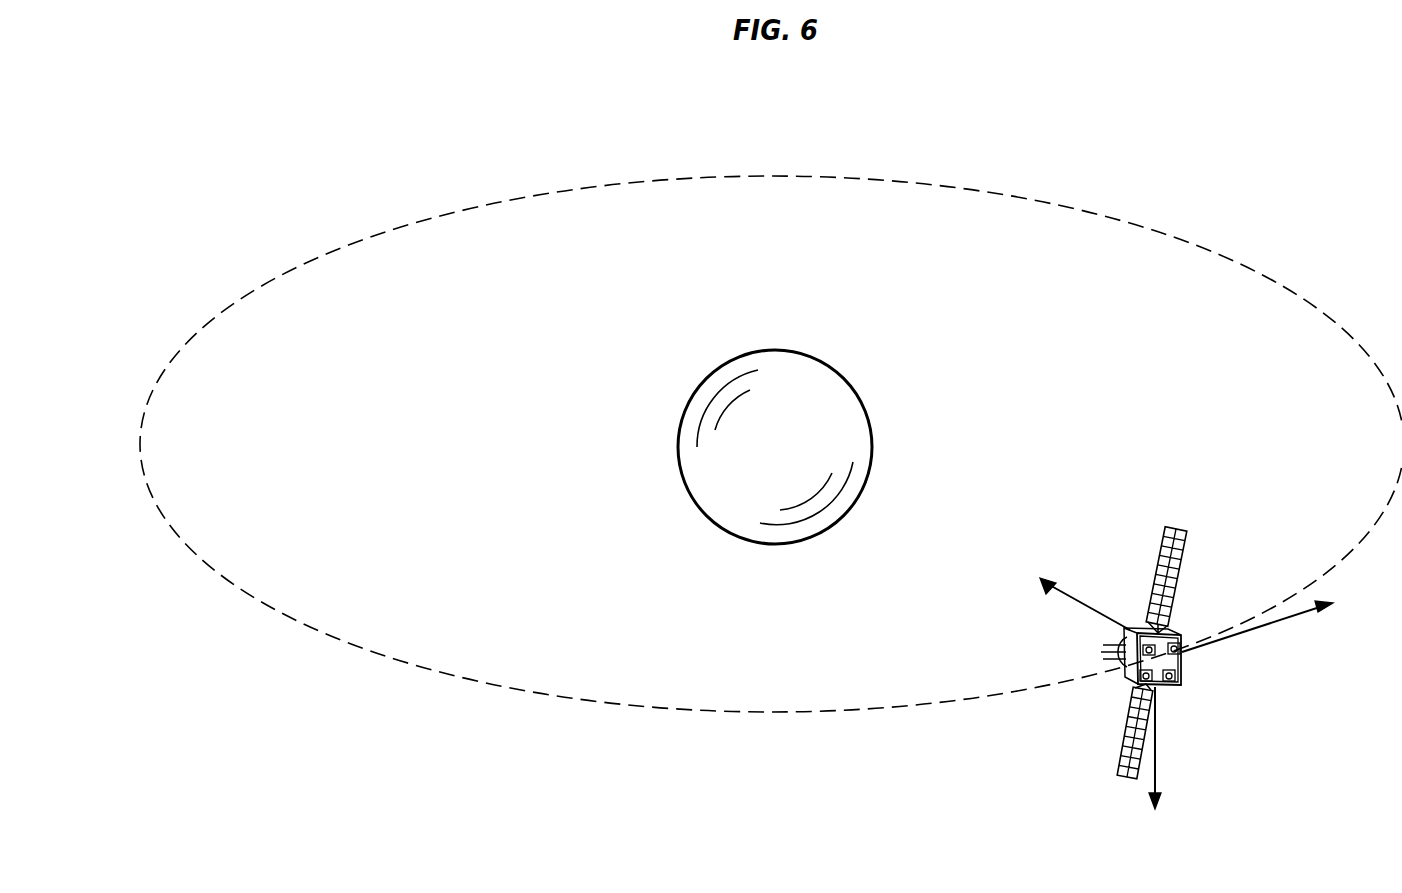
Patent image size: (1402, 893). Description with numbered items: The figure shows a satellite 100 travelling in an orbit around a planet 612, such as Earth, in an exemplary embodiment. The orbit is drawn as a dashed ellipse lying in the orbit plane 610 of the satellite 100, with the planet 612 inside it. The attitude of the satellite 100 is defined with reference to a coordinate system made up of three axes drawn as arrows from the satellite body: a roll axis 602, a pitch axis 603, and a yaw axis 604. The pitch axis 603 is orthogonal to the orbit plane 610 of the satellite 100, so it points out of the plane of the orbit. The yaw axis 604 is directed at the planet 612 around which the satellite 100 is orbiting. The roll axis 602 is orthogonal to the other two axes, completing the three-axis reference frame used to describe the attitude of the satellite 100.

The satellite 100 is at (1143, 620).
The roll axis 602 is at (1285, 618).
The pitch axis 603 is at (1155, 753).
The yaw axis 604 is at (1072, 603).
The orbit plane 610 is at (513, 690).
The planet 612 is at (738, 503).